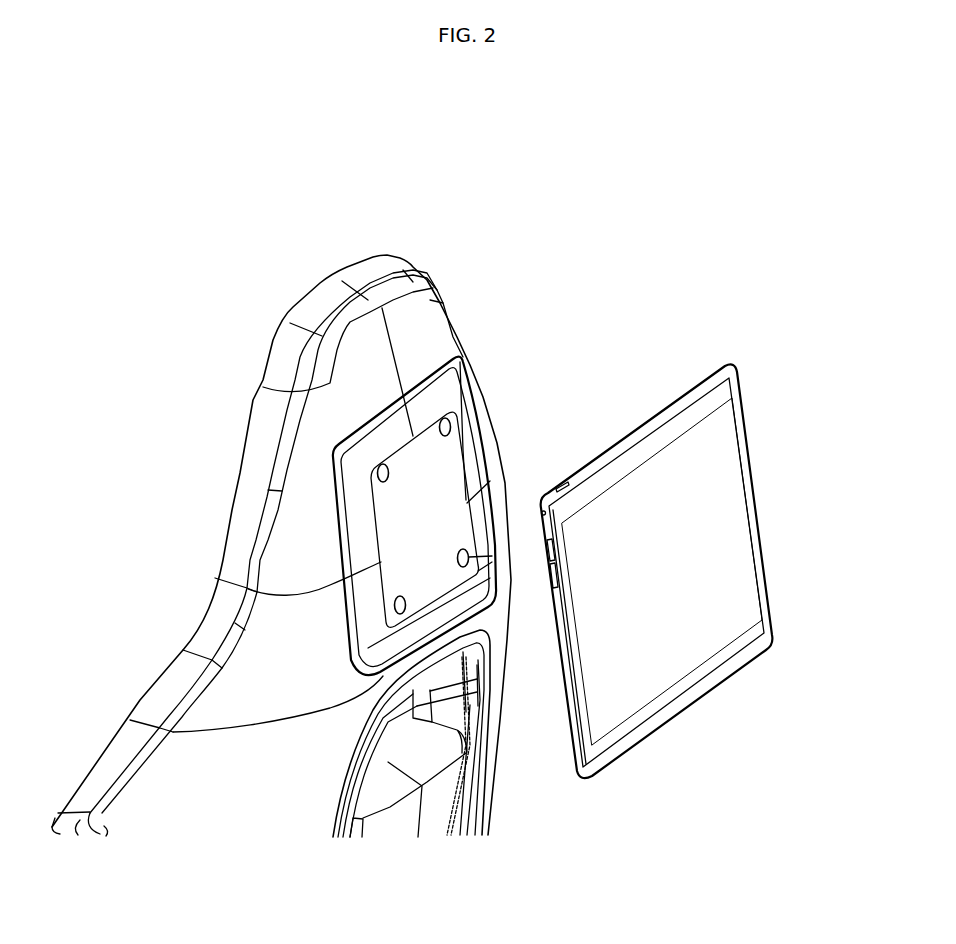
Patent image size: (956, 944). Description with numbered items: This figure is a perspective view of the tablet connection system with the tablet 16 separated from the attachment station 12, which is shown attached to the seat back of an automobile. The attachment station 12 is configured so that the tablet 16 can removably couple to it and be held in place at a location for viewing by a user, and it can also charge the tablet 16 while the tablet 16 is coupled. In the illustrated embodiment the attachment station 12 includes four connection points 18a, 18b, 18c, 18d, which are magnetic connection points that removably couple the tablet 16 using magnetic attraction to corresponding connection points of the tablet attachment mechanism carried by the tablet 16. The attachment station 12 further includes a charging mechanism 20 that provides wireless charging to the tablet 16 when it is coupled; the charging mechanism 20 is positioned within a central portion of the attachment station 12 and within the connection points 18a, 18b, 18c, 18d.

The attachment station 12 is at (487, 422).
The tablet 16 is at (753, 470).
The connection point 18a is at (378, 470).
The connection point 18b is at (447, 418).
The connection point 18c is at (394, 617).
The connection point 18d is at (469, 550).
The charging mechanism 20 is at (415, 523).